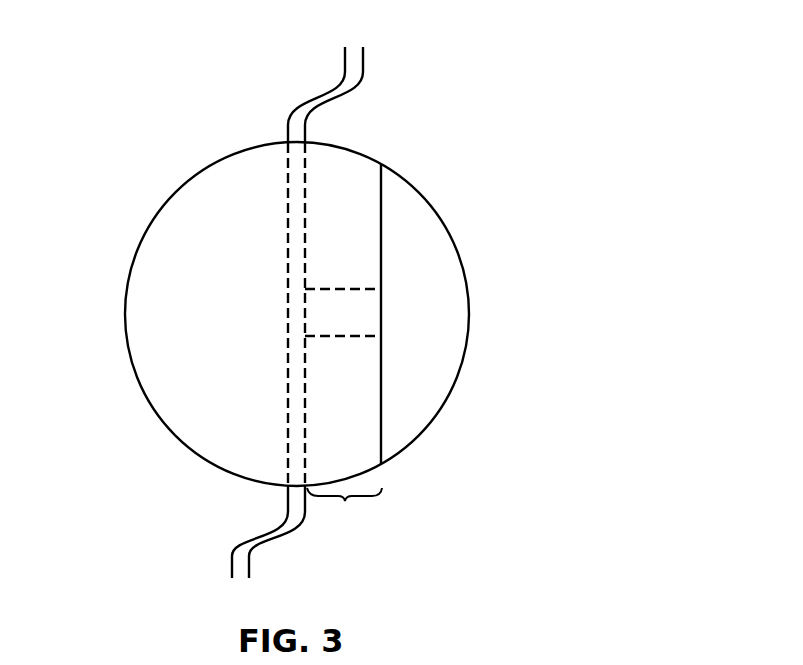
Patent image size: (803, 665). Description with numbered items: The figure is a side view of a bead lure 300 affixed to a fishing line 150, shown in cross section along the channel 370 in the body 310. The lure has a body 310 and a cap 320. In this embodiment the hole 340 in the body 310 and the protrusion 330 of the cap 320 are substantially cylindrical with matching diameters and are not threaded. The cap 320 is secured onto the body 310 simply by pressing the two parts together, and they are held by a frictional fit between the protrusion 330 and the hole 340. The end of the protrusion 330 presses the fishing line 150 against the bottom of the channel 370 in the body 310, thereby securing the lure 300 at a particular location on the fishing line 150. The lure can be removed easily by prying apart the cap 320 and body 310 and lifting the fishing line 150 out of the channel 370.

The bead lure 300 is at (176, 103).
The body 310 is at (140, 279).
The cap 320 is at (425, 238).
The protrusion 330 is at (343, 323).
The hole 340 is at (340, 289).
The fishing line 150 is at (366, 67).
The channel 370 is at (344, 506).